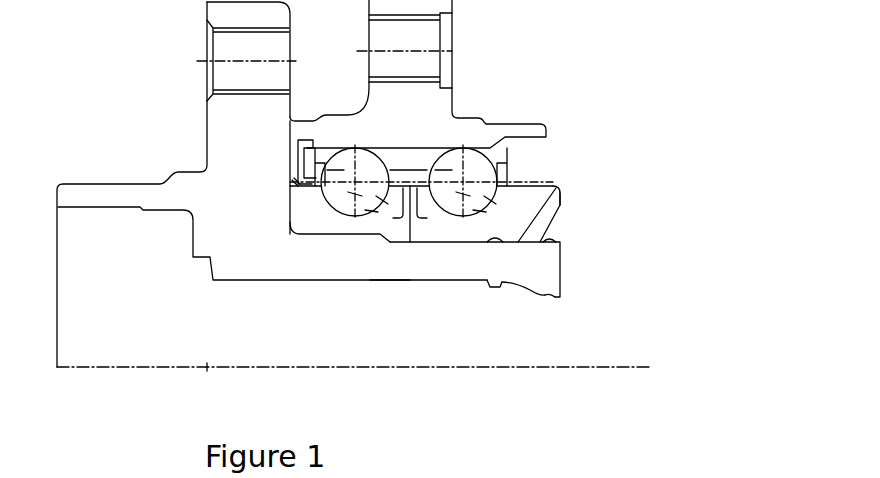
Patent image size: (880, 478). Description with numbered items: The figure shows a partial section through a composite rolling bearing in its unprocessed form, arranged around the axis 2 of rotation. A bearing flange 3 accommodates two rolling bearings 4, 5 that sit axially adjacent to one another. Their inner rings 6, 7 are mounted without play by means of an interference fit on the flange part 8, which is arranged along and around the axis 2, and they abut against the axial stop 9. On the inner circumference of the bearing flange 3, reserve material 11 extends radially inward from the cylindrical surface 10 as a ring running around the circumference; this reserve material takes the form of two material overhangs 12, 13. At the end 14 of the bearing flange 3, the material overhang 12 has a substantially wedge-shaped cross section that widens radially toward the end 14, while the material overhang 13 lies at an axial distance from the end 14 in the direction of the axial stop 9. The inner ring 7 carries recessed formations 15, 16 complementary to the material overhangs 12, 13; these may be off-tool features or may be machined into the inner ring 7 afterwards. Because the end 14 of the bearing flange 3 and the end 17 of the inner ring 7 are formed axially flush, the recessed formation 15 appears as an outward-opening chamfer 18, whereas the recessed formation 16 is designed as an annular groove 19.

The axis of rotation 2 is at (108, 367).
The bearing flange 3 is at (222, 143).
The rolling bearing 4 is at (347, 128).
The rolling bearing 5 is at (478, 123).
The inner ring 6 is at (316, 228).
The inner ring 7 is at (448, 230).
The flange part 8 is at (368, 265).
The axial stop 9 is at (287, 208).
The cylindrical surface 10 is at (390, 283).
The reserve material 11 is at (545, 301).
The material overhang 12 is at (555, 298).
The material overhang 13 is at (491, 281).
The end 14 is at (562, 265).
The recessed formation 15 is at (553, 229).
The recessed formation 16 is at (496, 237).
The end 17 is at (563, 195).
The chamfer 18 is at (548, 238).
The annular groove 19 is at (558, 187).